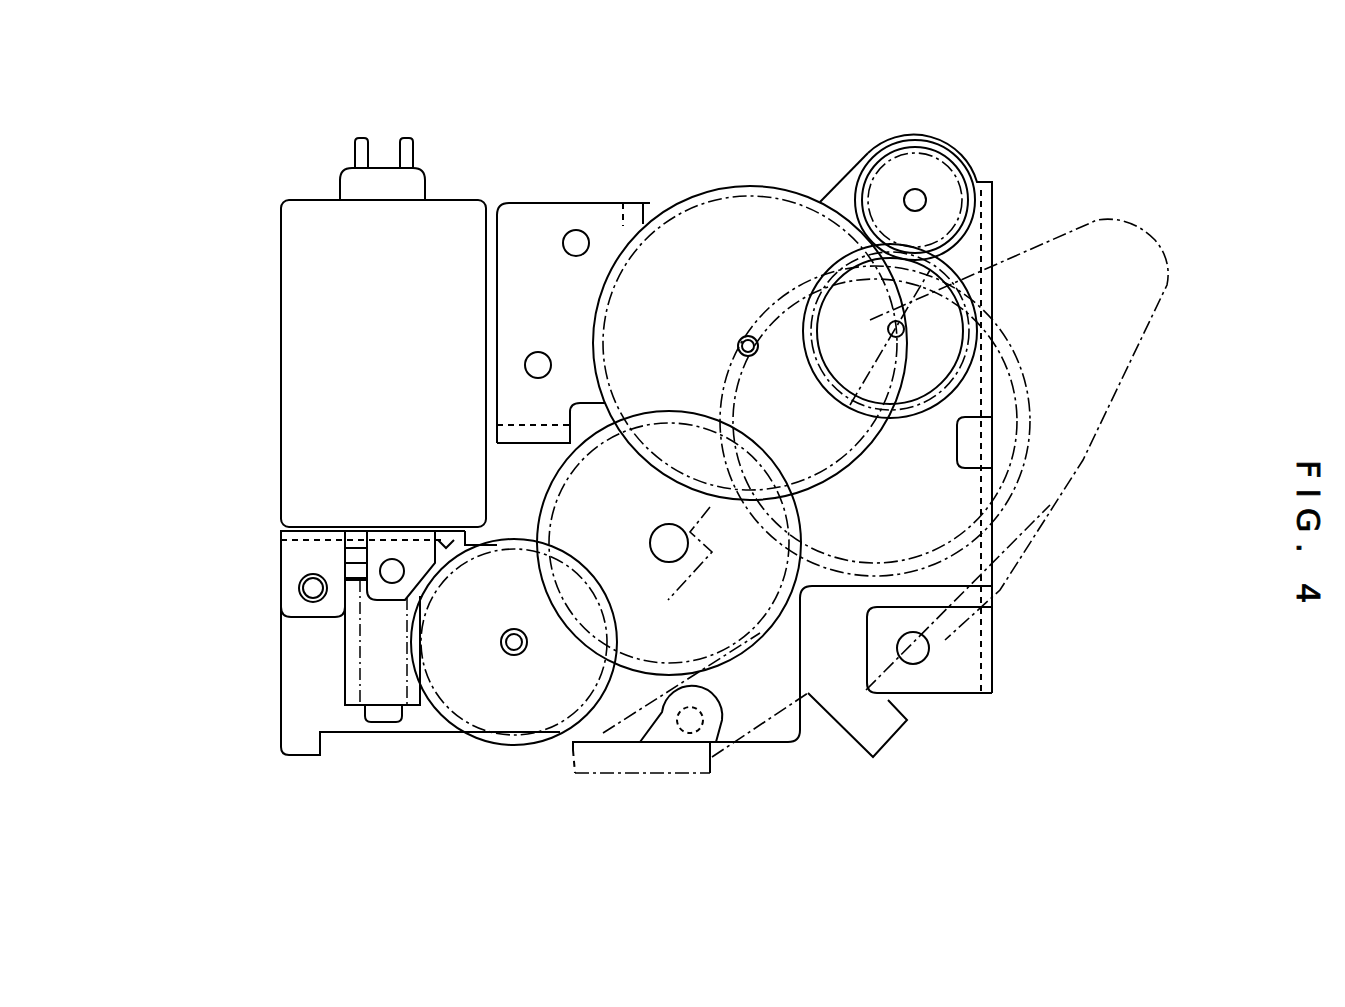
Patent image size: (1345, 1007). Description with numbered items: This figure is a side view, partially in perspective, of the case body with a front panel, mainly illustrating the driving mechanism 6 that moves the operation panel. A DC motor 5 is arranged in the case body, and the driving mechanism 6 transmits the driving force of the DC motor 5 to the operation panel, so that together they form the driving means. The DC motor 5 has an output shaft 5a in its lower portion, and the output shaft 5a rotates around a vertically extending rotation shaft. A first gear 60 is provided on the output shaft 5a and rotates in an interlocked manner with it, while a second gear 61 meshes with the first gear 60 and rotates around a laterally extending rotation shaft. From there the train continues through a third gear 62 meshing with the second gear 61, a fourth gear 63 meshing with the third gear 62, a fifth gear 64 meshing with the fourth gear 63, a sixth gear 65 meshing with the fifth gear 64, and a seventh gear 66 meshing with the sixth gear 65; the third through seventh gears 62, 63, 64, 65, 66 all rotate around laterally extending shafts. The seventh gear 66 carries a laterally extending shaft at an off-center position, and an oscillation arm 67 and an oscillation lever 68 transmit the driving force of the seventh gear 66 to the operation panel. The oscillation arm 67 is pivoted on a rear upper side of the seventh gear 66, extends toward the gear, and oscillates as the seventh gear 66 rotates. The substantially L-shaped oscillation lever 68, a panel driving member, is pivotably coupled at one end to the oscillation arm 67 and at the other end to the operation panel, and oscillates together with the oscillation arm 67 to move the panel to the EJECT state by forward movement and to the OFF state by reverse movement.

The DC motor 5 is at (302, 377).
The output shaft 5a is at (381, 722).
The driving mechanism 6 is at (743, 166).
The first gear 60 is at (352, 660).
The second gear 61 is at (523, 715).
The third gear 62 is at (652, 590).
The fourth gear 63 is at (683, 240).
The fifth gear 64 is at (903, 250).
The sixth gear 65 is at (923, 168).
The seventh gear 66 is at (1033, 433).
The oscillation arm 67 is at (1148, 233).
The oscillation lever 68 is at (682, 775).